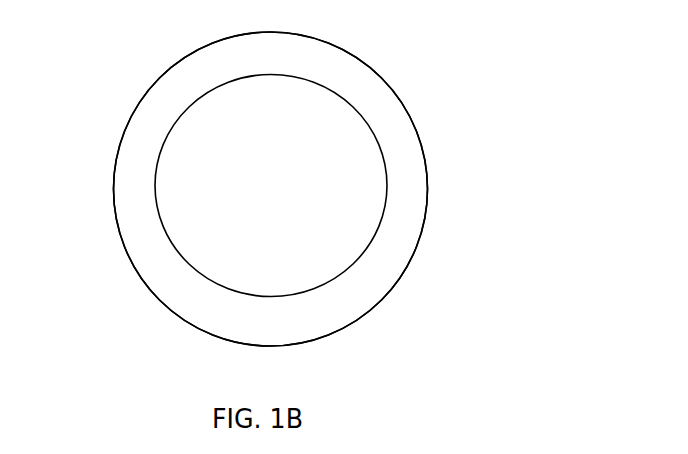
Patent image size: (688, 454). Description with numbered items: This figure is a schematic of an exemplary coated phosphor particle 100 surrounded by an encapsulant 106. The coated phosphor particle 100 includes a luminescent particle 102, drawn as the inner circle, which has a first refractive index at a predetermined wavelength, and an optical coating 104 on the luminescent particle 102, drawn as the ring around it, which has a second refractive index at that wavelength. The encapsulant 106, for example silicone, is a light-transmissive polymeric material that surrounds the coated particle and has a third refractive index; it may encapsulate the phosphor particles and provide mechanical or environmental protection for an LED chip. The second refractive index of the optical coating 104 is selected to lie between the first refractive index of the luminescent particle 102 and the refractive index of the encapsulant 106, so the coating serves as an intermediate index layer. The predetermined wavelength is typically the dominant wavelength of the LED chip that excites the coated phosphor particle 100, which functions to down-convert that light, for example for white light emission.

The coated phosphor particle 100 is at (415, 90).
The luminescent particle 102 is at (357, 230).
The optical coating 104 is at (155, 270).
The encapsulant 106 is at (137, 62).